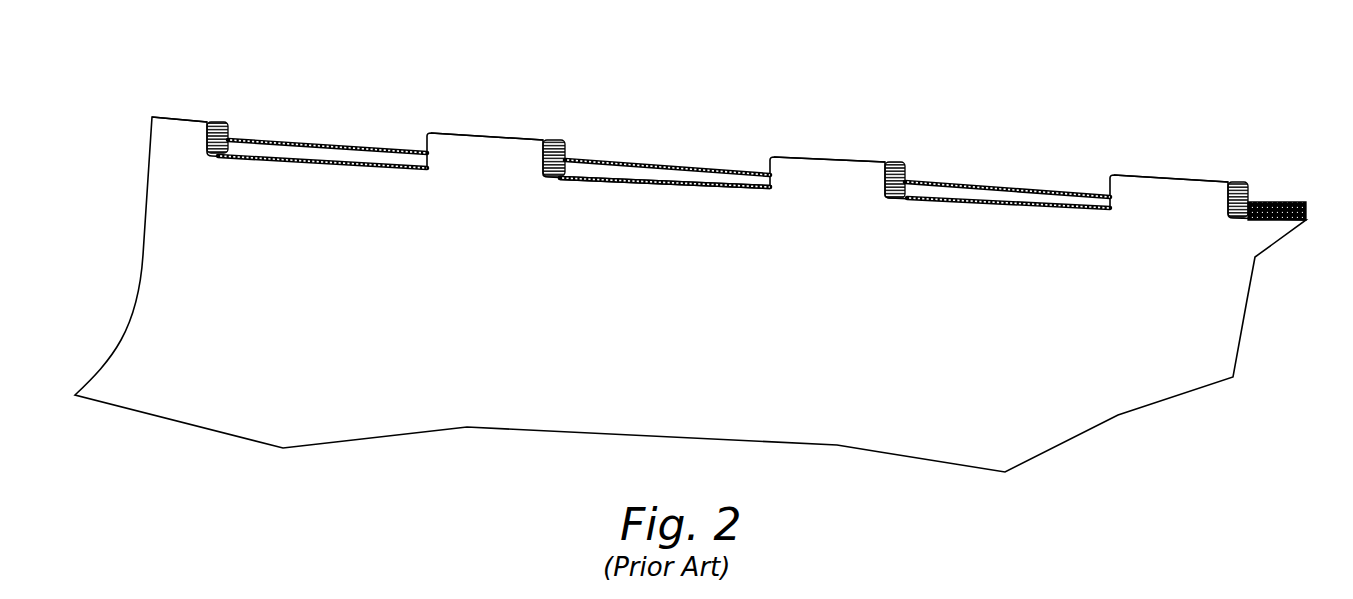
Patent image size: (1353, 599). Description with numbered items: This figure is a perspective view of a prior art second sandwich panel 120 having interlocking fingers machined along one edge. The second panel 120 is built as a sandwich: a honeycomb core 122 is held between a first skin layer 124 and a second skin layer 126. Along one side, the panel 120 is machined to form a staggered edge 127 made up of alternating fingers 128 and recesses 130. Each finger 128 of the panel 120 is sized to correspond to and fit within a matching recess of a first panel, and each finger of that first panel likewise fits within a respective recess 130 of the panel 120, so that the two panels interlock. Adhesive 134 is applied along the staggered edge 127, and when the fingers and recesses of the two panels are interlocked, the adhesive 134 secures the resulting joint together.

The second panel 120 is at (701, 244).
The honeycomb core 122 is at (1289, 203).
The first skin layer 124 is at (601, 353).
The second skin layer 126 is at (841, 157).
The staggered edge 127 is at (156, 99).
The fingers 128 is at (477, 156).
The recesses 130 is at (772, 196).
The adhesive 134 is at (667, 177).